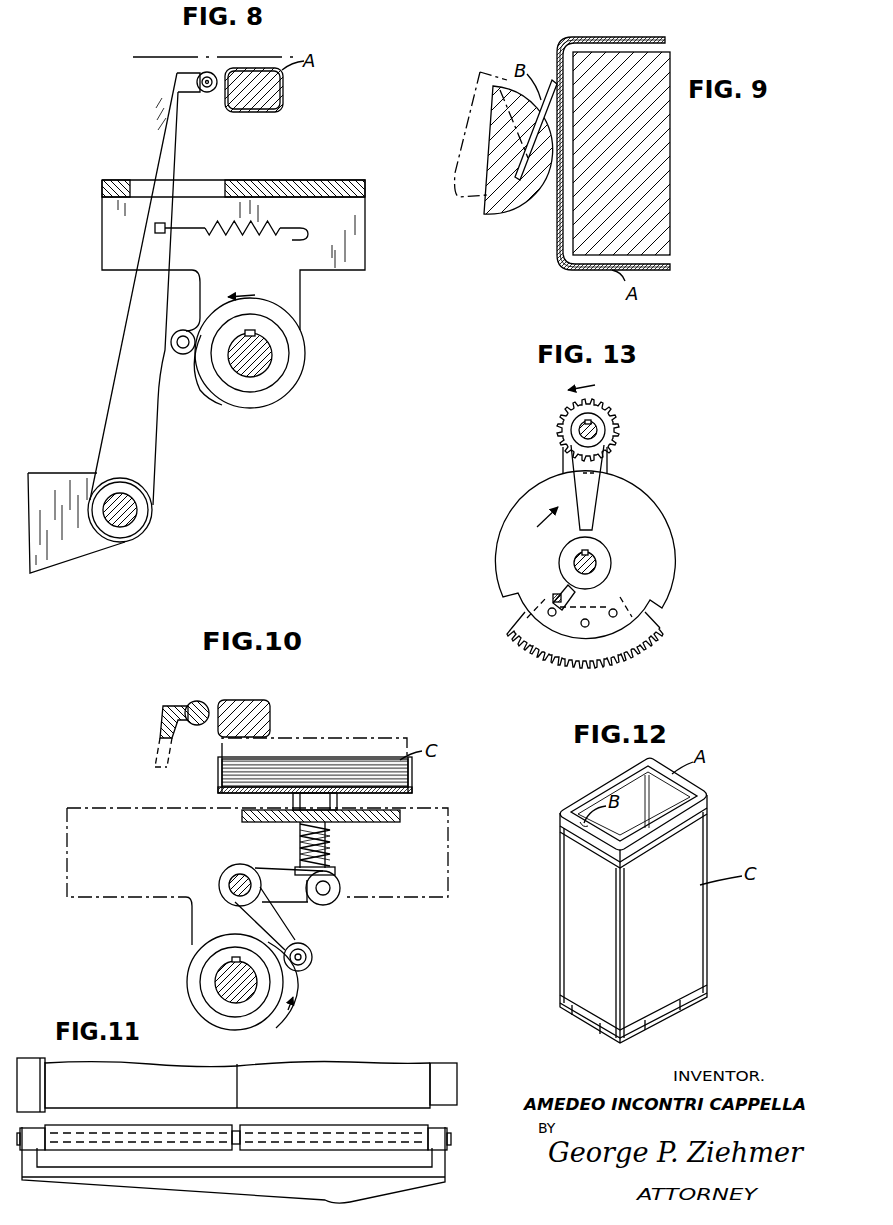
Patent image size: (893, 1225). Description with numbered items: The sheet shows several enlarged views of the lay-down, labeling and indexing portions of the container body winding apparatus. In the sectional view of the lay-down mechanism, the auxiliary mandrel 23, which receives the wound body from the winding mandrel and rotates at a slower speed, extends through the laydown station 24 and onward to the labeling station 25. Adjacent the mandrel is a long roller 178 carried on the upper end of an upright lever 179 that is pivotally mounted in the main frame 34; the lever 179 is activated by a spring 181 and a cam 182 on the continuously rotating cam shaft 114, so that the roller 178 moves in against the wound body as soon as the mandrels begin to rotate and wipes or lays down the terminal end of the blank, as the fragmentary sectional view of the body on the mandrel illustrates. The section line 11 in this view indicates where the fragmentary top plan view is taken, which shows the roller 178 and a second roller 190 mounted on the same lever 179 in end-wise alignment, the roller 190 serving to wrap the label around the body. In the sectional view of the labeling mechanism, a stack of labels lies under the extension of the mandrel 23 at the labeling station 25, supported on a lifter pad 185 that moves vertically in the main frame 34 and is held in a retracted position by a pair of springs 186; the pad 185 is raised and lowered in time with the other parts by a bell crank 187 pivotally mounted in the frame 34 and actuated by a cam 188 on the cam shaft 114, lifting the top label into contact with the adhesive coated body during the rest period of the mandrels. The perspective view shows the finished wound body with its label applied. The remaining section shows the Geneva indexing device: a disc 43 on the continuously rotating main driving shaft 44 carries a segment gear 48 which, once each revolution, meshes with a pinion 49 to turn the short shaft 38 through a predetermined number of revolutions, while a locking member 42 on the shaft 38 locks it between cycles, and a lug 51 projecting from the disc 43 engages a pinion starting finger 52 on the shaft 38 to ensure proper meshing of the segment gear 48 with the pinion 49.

In FIG. 8, the section line 11— 11 is at (165, 23).
In FIG. 8, the auxiliary mandrel 23 is at (284, 102).
In FIG. 9, the auxiliary mandrel 23 is at (672, 172).
In FIG. 10, the auxiliary mandrel 23 is at (268, 702).
In FIG. 11, the auxiliary mandrel 23 is at (450, 1079).
In FIG. 8, the main frame 34 is at (104, 237).
In FIG. 8, the long roller 178 is at (205, 93).
In FIG. 11, the long roller 178 is at (140, 1127).
In FIG. 8, the upright lever 179 is at (123, 388).
In FIG. 10, the upright lever 179 is at (163, 724).
In FIG. 11, the upright lever 179 is at (433, 1170).
In FIG. 8, the spring 181 is at (272, 238).
In FIG. 8, the cam 182 is at (305, 362).
In FIG. 8, the cam shaft 114 is at (247, 375).
In FIG. 10, the cam shaft 114 is at (227, 975).
In FIG. 10, the roller 190 is at (197, 702).
In FIG. 11, the roller 190 is at (420, 1126).
In FIG. 10, the lifter pad 185 is at (218, 782).
In FIG. 10, the springs 186 is at (337, 846).
In FIG. 10, the bell crank 187 is at (283, 916).
In FIG. 10, the cam 188 is at (303, 990).
In FIG. 11, the laydown station 24 is at (196, 1060).
In FIG. 11, the labeling station 25 is at (375, 1060).
In FIG. 13, the pinion 49 is at (557, 425).
In FIG. 13, the short shaft 38 is at (598, 430).
In FIG. 13, the locking member 42 is at (604, 458).
In FIG. 13, the pinion starting finger 52 is at (590, 511).
In FIG. 13, the disc 43 is at (655, 524).
In FIG. 13, the main driving shaft 44 is at (575, 562).
In FIG. 13, the lug 51 is at (560, 594).
In FIG. 13, the segment gear 48 is at (528, 655).